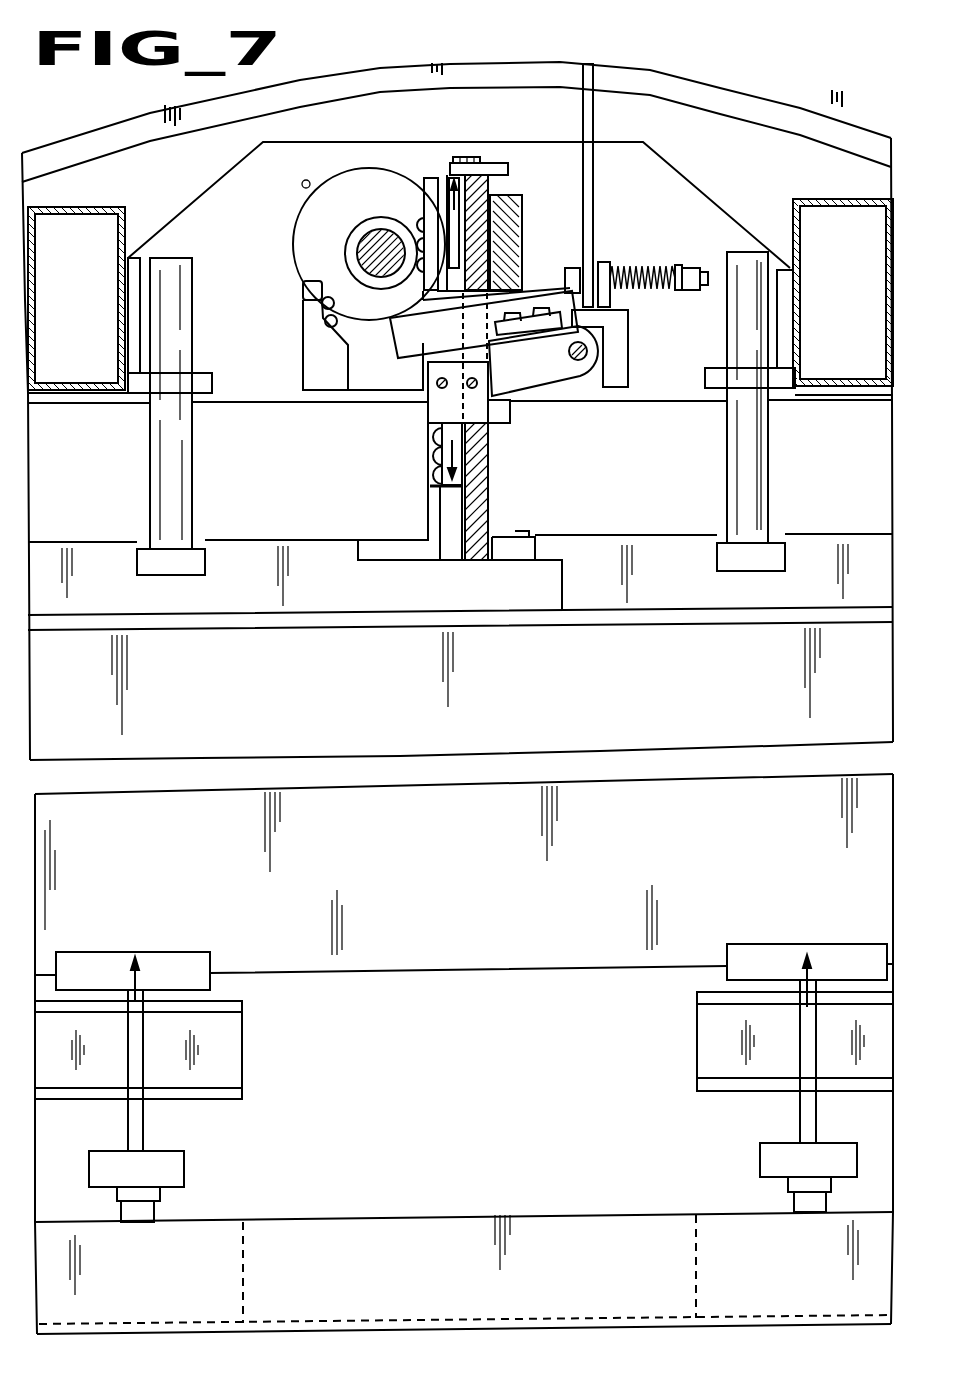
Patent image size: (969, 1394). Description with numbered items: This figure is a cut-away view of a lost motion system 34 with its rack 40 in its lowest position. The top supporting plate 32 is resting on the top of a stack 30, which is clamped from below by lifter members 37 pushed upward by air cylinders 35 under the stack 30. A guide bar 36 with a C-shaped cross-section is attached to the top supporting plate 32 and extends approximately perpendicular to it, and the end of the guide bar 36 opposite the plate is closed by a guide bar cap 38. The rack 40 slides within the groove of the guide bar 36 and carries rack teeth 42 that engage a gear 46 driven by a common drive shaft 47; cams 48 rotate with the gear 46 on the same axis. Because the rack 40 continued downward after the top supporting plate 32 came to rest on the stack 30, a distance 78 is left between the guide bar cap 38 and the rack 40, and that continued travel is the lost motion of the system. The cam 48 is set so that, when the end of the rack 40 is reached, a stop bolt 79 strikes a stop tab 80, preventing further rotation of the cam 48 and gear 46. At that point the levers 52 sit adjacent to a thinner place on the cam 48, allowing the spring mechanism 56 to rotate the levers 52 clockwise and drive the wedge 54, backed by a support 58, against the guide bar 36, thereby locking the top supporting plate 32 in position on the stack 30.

The stack 30 is at (296, 696).
The top supporting plate 32 is at (231, 558).
The lost motion system 34 is at (527, 223).
The air cylinder 35 is at (245, 1279).
The guide bar 36 is at (478, 494).
The lifter member 37 is at (106, 962).
The guide bar cap 38 is at (492, 168).
The rack 40 is at (460, 451).
The rack teeth 42 is at (430, 470).
The gear 46 is at (423, 234).
The drive shaft 47 is at (372, 240).
The cam 48 is at (315, 253).
The lever 52 is at (402, 338).
The wedge 54 is at (546, 372).
The spring mechanism 56 is at (634, 264).
The support 58 is at (616, 351).
The distance 78 is at (474, 191).
The stop bolt 79 is at (326, 334).
The stop tab 80 is at (303, 299).